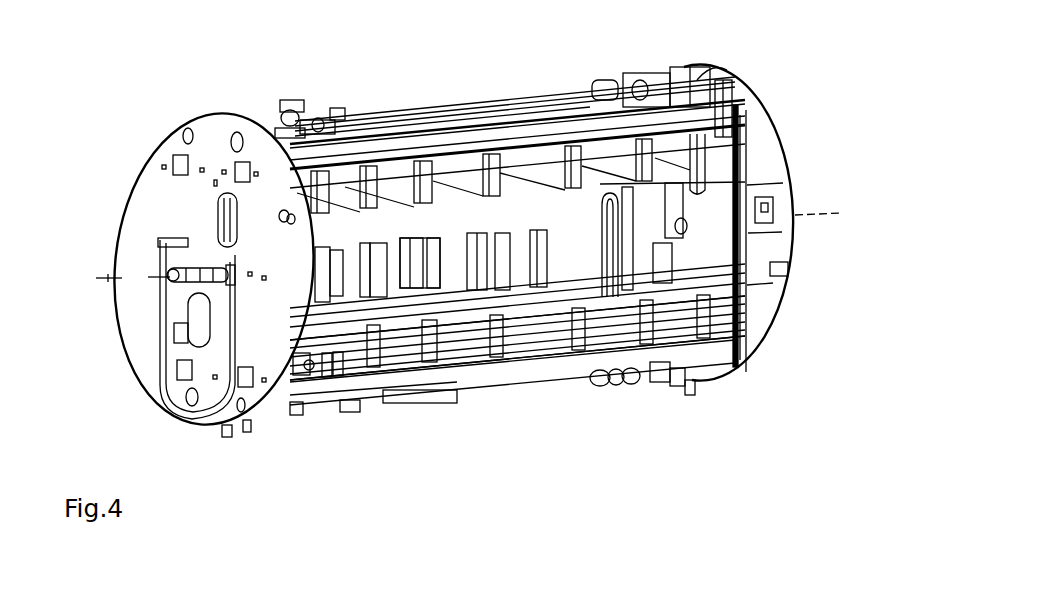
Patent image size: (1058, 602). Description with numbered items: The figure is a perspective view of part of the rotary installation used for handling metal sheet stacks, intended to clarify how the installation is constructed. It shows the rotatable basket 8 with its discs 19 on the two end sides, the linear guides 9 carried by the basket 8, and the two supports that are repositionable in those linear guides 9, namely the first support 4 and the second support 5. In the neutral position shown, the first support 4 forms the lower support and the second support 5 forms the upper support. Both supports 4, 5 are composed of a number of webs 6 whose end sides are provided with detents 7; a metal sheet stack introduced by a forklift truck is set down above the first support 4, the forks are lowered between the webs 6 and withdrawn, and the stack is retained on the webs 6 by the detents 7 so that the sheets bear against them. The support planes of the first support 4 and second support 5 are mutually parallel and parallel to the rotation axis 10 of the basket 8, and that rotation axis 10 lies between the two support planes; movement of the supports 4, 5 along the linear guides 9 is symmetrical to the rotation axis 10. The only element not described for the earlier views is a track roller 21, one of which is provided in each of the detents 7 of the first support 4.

The first support 4 is at (528, 313).
The second support 5 is at (453, 190).
The webs 6 is at (528, 313).
The detents 7 is at (400, 255).
The rotatable basket 8 is at (835, 72).
The linear guides 9 is at (787, 300).
The rotation axis 10 is at (840, 213).
The discs 19 is at (806, 157).
The track roller 21 is at (417, 263).